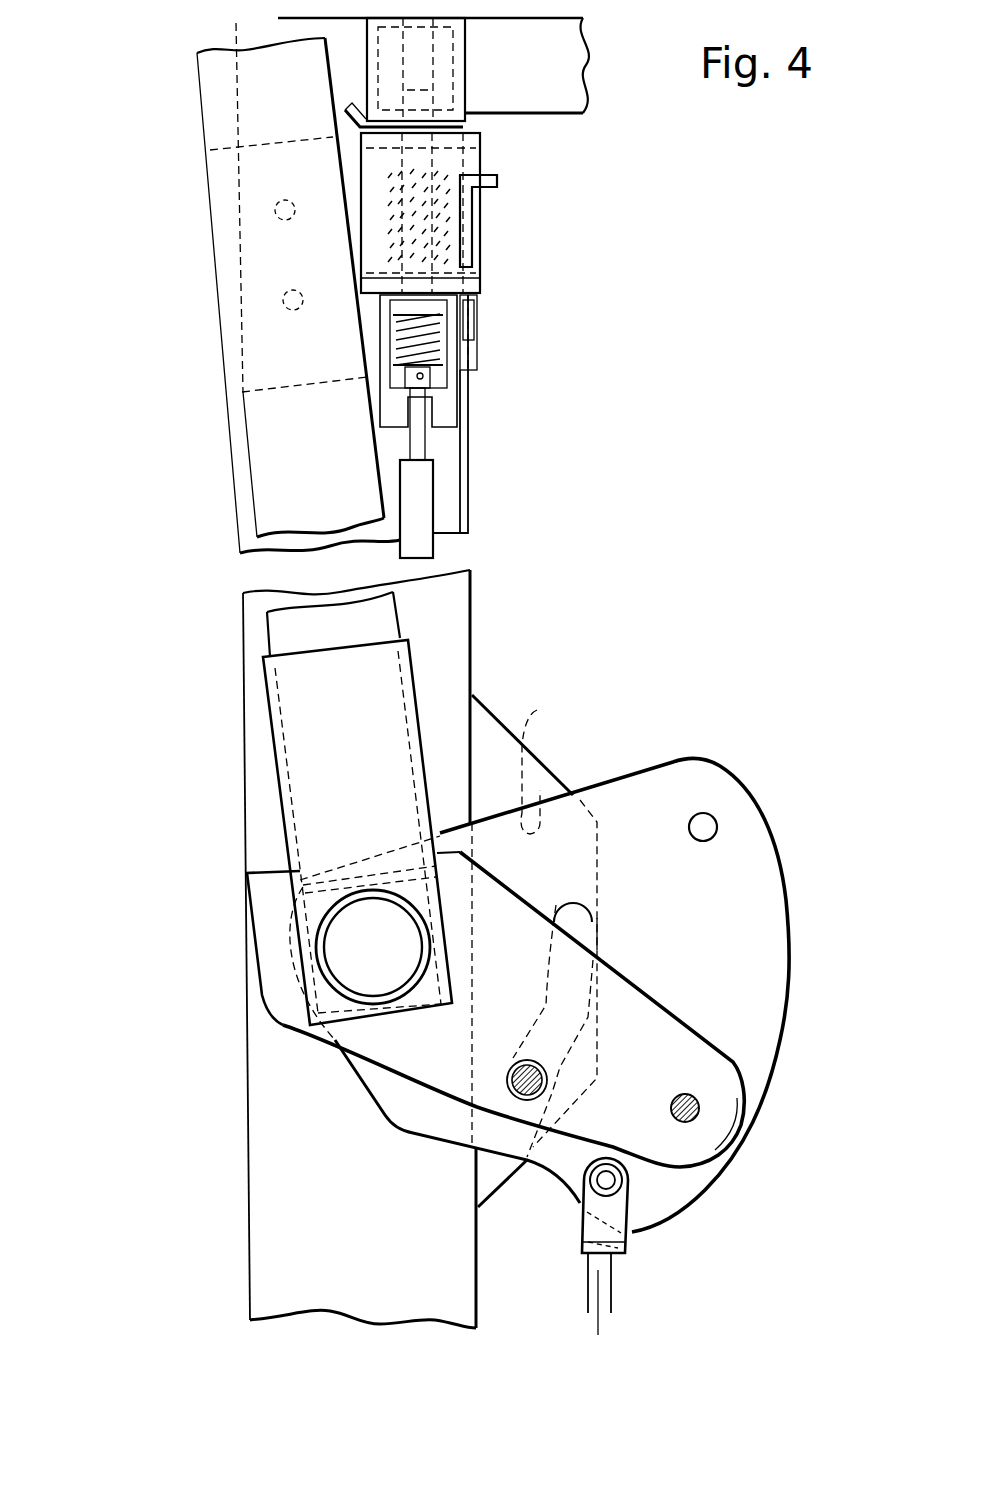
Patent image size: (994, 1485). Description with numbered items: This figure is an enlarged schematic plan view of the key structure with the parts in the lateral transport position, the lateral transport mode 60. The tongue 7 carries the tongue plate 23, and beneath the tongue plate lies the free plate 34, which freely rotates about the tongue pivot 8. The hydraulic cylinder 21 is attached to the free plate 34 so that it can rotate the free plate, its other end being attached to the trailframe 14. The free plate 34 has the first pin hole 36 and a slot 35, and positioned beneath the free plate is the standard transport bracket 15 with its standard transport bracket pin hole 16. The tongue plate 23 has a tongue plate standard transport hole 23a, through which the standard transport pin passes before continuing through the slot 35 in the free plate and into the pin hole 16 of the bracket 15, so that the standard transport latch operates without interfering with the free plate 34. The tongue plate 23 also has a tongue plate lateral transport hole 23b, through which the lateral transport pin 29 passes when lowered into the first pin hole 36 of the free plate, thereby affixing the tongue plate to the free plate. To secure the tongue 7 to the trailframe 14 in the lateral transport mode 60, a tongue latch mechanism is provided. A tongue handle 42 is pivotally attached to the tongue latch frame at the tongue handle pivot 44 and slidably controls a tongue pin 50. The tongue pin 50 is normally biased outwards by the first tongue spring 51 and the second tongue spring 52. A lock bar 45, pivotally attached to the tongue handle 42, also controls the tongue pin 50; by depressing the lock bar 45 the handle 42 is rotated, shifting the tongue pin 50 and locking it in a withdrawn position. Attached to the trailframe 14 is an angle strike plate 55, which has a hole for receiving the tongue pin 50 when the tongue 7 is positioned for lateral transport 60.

The lateral transport mode 60 is at (193, 108).
The trailframe 14 is at (565, 105).
The angle strike plate 55 is at (353, 110).
The second tongue spring 52 is at (383, 232).
The lock bar 45 is at (497, 182).
The tongue handle pivot 44 is at (480, 322).
The first tongue spring 51 is at (395, 338).
The tongue pin 50 is at (402, 376).
The tongue handle 42 is at (418, 496).
The tongue 7 is at (290, 632).
The tongue pivot 8 is at (320, 942).
The standard transport bracket 15 is at (553, 770).
The standard transport bracket pin hole 16 is at (537, 710).
The free plate 34 is at (757, 897).
The first pin hole 36 is at (715, 822).
The slot 35 is at (598, 925).
The tongue plate 23 is at (700, 1057).
The lateral transport pin 29 is at (700, 1108).
The tongue plate standard transport hole 23a is at (517, 1063).
The tongue plate lateral transport hole 23b is at (706, 1126).
The hydraulic cylinder 21 is at (612, 1285).